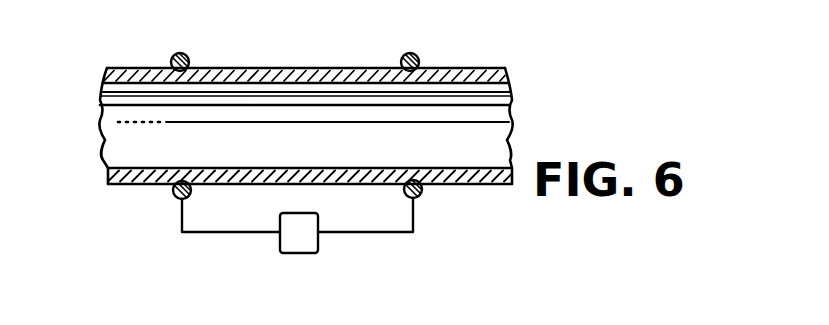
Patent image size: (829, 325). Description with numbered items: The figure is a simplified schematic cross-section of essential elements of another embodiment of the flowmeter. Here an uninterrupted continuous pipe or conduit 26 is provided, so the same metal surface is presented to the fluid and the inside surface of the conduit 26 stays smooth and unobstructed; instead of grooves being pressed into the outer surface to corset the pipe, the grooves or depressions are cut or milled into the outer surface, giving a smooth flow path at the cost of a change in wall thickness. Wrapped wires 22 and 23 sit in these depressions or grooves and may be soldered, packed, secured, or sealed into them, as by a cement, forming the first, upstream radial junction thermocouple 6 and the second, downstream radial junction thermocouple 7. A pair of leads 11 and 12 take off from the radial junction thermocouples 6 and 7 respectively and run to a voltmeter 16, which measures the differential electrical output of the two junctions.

The first radial junction thermocouple 6 is at (160, 60).
The second radial junction thermocouple 7 is at (392, 60).
The continuous conduit 26 is at (143, 67).
The wrapped wire 22 is at (189, 56).
The wrapped wire 23 is at (418, 57).
The lead 11 is at (182, 232).
The lead 12 is at (414, 215).
The voltmeter 16 is at (313, 264).